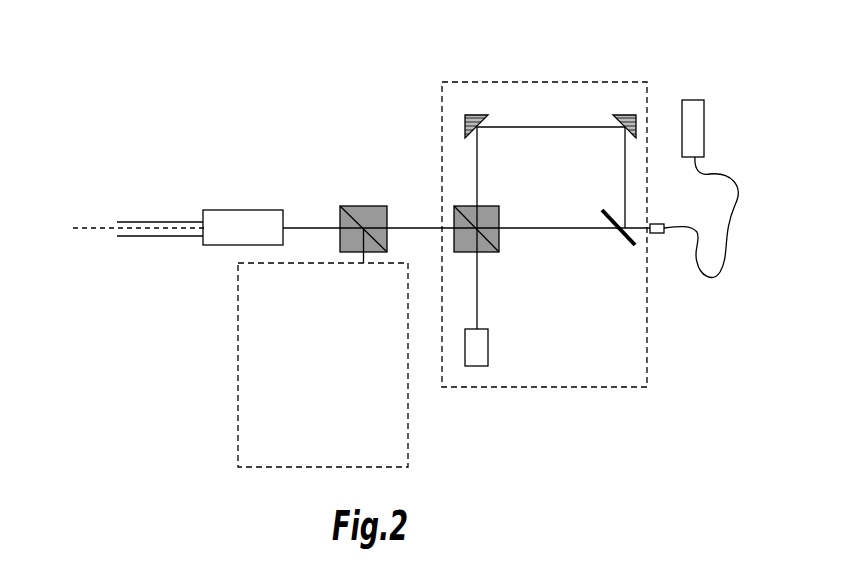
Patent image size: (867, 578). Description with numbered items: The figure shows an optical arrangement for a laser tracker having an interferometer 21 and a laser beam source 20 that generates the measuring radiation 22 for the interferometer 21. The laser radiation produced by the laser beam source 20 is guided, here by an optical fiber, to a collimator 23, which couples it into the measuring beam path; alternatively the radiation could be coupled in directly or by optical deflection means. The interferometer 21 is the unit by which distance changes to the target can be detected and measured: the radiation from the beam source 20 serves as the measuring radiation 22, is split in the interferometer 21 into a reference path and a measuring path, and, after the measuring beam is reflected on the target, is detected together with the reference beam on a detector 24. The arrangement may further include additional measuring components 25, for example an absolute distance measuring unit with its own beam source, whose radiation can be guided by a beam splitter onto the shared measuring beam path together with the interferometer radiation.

The laser beam source 20 is at (695, 130).
The interferometer 21 is at (591, 104).
The measuring radiation 22 is at (90, 228).
The collimator 23 is at (658, 233).
The detector 24 is at (478, 353).
The additional measuring components 25 is at (262, 418).